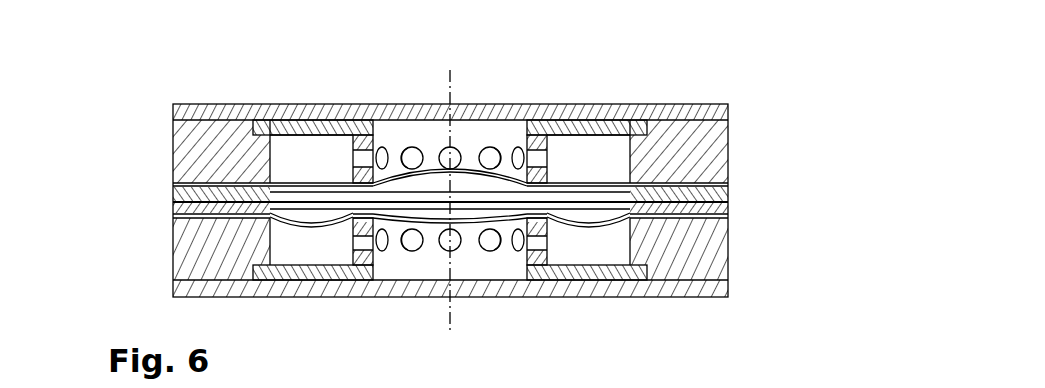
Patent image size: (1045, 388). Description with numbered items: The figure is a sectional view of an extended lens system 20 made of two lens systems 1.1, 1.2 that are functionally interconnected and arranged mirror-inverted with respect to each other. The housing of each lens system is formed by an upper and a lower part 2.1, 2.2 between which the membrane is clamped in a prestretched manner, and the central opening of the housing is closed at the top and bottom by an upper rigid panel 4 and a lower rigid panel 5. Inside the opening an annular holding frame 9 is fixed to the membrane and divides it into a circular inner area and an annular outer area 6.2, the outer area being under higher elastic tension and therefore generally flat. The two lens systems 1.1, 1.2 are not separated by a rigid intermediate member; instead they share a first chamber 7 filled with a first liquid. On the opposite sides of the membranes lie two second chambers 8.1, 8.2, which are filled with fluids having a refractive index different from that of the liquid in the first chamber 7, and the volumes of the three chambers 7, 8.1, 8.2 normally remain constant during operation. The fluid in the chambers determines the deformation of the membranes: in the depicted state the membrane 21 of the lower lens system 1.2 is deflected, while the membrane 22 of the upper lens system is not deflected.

The extended lens system 20 is at (148, 86).
The upper lens system 1.1 is at (148, 156).
The lower lens system 1.2 is at (148, 235).
The upper rigid panel 4 is at (683, 108).
The lower rigid panel 5 is at (703, 292).
The lower housing part 2.2 is at (700, 150).
The upper housing part 2.1 is at (715, 193).
The first chamber 7 is at (470, 205).
The annular holding frame 9 is at (537, 135).
The second chamber of the upper lens system 8.2 is at (417, 130).
The second chamber of the lower lens system 8.1 is at (430, 265).
The annular outer area of the membrane 6.2 is at (507, 135).
The membrane of the upper lens system 22 is at (400, 175).
The membrane of the lower lens system 21 is at (403, 222).